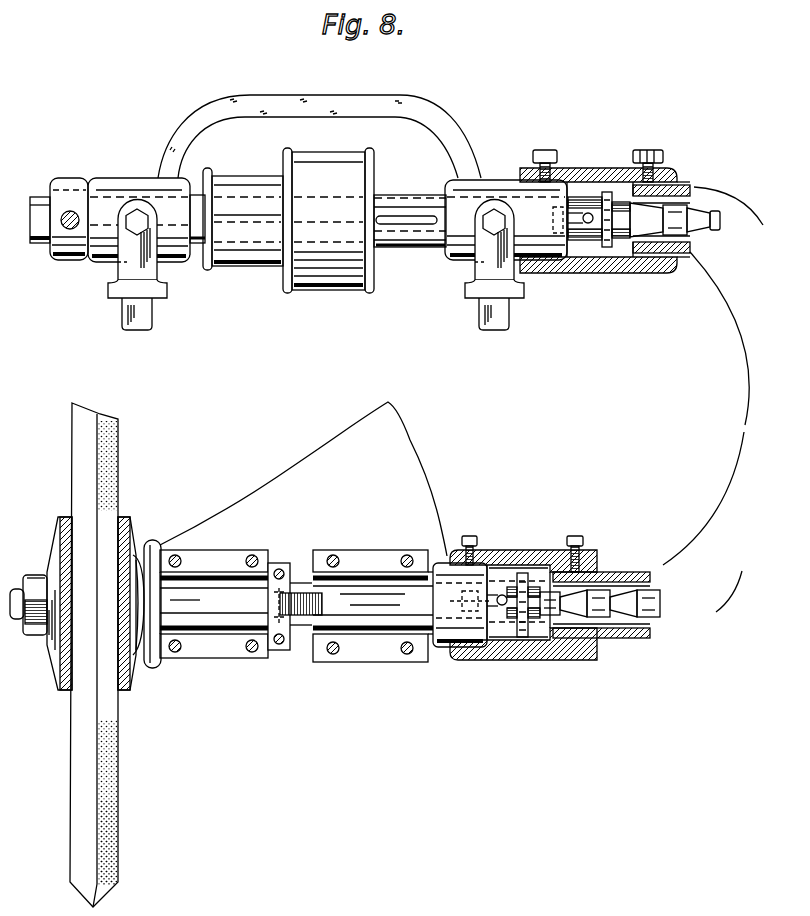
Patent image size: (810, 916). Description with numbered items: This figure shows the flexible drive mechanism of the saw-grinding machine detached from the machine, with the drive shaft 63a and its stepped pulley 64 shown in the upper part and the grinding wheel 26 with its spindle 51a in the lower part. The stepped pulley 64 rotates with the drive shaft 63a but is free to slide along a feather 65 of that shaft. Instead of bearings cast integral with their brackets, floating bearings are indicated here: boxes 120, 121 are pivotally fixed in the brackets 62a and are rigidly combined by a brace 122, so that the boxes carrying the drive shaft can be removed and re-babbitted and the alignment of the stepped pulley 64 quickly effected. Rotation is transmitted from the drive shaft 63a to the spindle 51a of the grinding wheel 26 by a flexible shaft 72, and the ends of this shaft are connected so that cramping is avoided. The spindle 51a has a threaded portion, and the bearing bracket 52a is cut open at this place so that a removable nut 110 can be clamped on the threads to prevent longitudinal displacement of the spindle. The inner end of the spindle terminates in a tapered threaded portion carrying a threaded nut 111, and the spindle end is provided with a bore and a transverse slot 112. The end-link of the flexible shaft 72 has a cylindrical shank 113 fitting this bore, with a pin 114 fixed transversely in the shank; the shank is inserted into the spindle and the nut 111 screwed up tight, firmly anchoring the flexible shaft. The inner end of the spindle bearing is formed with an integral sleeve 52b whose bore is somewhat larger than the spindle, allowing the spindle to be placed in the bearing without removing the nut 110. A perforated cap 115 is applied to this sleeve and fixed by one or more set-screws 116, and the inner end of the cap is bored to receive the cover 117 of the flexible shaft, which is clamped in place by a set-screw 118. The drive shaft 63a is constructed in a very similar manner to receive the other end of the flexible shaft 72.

The box 120 is at (107, 187).
The brace 122 is at (378, 103).
The box 121 is at (487, 180).
The drive shaft 63a is at (387, 198).
The feather 65 is at (423, 226).
The stepped pulley 64 is at (325, 282).
The bracket 62a is at (162, 296).
The cover 117 is at (688, 187).
The flexible shaft 72 is at (718, 228).
The grinding wheel 26 is at (104, 453).
The bearing bracket 52a is at (303, 479).
The removable nut 110 is at (282, 593).
The spindle 51a is at (170, 612).
The set-screw 116 is at (471, 538).
The perforated cap 115 is at (503, 560).
The set-screw 118 is at (576, 538).
The sleeve 52b is at (444, 649).
The pin 114 is at (506, 622).
The threaded nut 111 is at (525, 639).
The transverse slot 112 is at (546, 626).
The cylindrical shank 113 is at (557, 620).